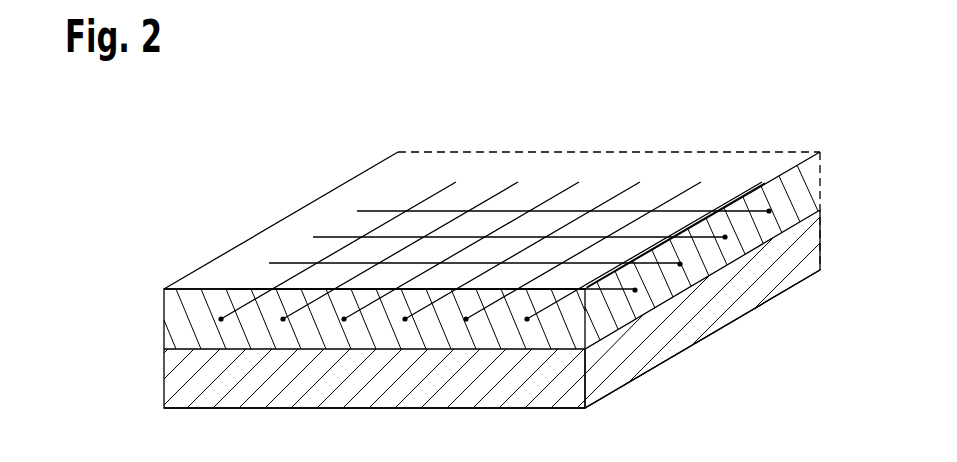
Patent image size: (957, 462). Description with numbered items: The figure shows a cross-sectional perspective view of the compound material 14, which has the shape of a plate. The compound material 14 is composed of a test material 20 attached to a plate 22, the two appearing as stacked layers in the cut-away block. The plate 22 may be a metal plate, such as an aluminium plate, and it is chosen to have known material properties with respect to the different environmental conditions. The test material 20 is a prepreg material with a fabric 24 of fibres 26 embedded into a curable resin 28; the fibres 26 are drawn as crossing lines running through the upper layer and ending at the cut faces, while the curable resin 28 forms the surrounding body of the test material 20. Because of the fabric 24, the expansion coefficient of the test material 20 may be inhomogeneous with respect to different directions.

The compound material 14 is at (117, 313).
The test material 20 is at (805, 183).
The plate 22 is at (806, 246).
The fabric 24 is at (539, 205).
The fibres 26 is at (452, 210).
The curable resin 28 is at (330, 278).